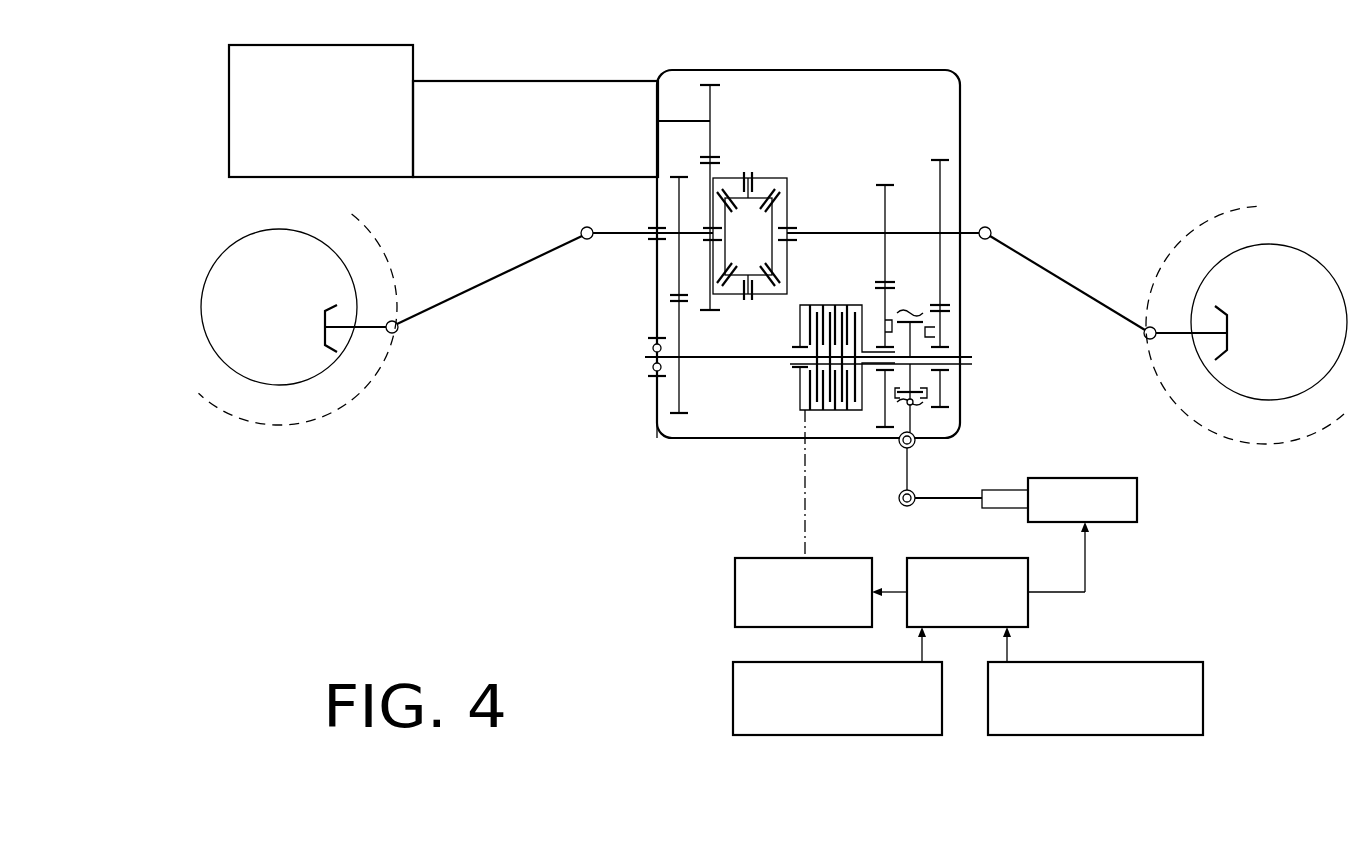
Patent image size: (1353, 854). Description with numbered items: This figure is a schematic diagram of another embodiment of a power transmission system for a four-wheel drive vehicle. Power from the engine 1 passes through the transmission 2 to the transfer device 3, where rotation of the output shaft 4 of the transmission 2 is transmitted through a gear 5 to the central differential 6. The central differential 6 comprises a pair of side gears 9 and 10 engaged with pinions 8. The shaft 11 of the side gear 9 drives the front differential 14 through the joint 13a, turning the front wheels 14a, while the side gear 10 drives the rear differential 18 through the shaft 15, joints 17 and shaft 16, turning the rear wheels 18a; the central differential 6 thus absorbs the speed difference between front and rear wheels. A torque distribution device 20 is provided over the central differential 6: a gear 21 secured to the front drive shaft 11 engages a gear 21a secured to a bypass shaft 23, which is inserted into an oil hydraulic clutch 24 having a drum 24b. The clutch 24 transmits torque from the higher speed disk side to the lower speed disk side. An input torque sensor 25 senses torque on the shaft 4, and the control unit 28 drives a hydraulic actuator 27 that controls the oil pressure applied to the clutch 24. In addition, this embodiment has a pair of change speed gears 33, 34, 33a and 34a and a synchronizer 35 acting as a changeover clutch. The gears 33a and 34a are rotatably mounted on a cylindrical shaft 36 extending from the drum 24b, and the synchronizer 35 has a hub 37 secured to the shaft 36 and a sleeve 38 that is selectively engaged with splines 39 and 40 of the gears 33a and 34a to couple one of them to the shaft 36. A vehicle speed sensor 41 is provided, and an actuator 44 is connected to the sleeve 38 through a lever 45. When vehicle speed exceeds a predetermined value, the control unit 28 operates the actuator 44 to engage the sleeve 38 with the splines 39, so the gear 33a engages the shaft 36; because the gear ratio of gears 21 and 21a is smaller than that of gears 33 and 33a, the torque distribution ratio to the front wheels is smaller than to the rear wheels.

The engine 1 is at (386, 53).
The transmission 2 is at (541, 90).
The transfer device 3 is at (937, 73).
The output shaft 4 is at (689, 124).
The gear 5 is at (731, 86).
The central differential 6 is at (774, 181).
The pinions 8 is at (720, 156).
The side gear 9 is at (730, 254).
The side gear 10 is at (771, 232).
The shaft 11 is at (615, 239).
The joint 13a is at (396, 334).
The front differential 14 is at (270, 385).
The front wheels 14a is at (335, 410).
The shaft 15 is at (834, 236).
The shaft 16 is at (1092, 279).
The joints 17 is at (1144, 340).
The rear differential 18 is at (1214, 266).
The rear wheels 18a is at (1245, 440).
The torque distribution device 20 is at (666, 403).
The gear 21 is at (685, 179).
The gear 21a is at (683, 388).
The bypass shaft 23 is at (725, 354).
The oil hydraulic clutch 24 is at (798, 404).
The drum 24b is at (798, 312).
The input torque sensor 25 is at (733, 690).
The hydraulic actuator 27 is at (735, 602).
The control unit 28 is at (982, 561).
The change speed gear 33 is at (885, 215).
The change speed gear 33a is at (882, 283).
The change speed gear 34 is at (938, 170).
The change speed gear 34a is at (950, 310).
The synchronizer 35 is at (941, 412).
The cylindrical shaft 36 is at (882, 416).
The hub 37 is at (945, 380).
The sleeve 38 is at (910, 307).
The splines 39 is at (884, 323).
The splines 40 is at (935, 336).
The vehicle speed sensor 41 is at (1172, 664).
The actuator 44 is at (1100, 478).
The lever 45 is at (911, 476).